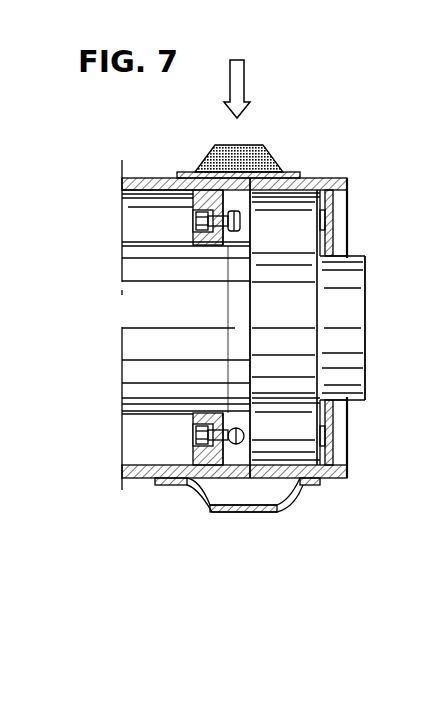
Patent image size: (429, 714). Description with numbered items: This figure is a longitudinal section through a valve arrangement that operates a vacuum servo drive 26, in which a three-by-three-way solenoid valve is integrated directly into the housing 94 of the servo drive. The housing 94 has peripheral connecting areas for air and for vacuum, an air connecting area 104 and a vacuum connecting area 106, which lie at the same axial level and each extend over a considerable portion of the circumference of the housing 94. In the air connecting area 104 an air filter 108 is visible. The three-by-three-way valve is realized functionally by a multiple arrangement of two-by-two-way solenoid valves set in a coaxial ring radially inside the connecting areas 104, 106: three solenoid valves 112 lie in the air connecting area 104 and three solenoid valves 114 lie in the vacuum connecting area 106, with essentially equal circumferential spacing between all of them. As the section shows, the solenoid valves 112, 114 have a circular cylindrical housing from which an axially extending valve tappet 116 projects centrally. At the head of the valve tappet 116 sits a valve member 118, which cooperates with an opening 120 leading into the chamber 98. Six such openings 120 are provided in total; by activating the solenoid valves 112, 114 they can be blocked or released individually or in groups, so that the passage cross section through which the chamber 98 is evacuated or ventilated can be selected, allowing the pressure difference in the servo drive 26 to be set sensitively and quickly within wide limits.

The vacuum servo drive 26 is at (148, 145).
The housing 94 is at (122, 473).
The chamber 98 is at (135, 197).
The air connecting area 104 is at (222, 146).
The vacuum connecting area 106 is at (210, 506).
The air filter 108 is at (255, 145).
The 2/2-way solenoid valves 112 is at (303, 202).
The 2/2-way solenoid valves 114 is at (302, 443).
The valve tappet 116 is at (272, 178).
The valve member 118 is at (236, 236).
The opening 120 is at (193, 228).